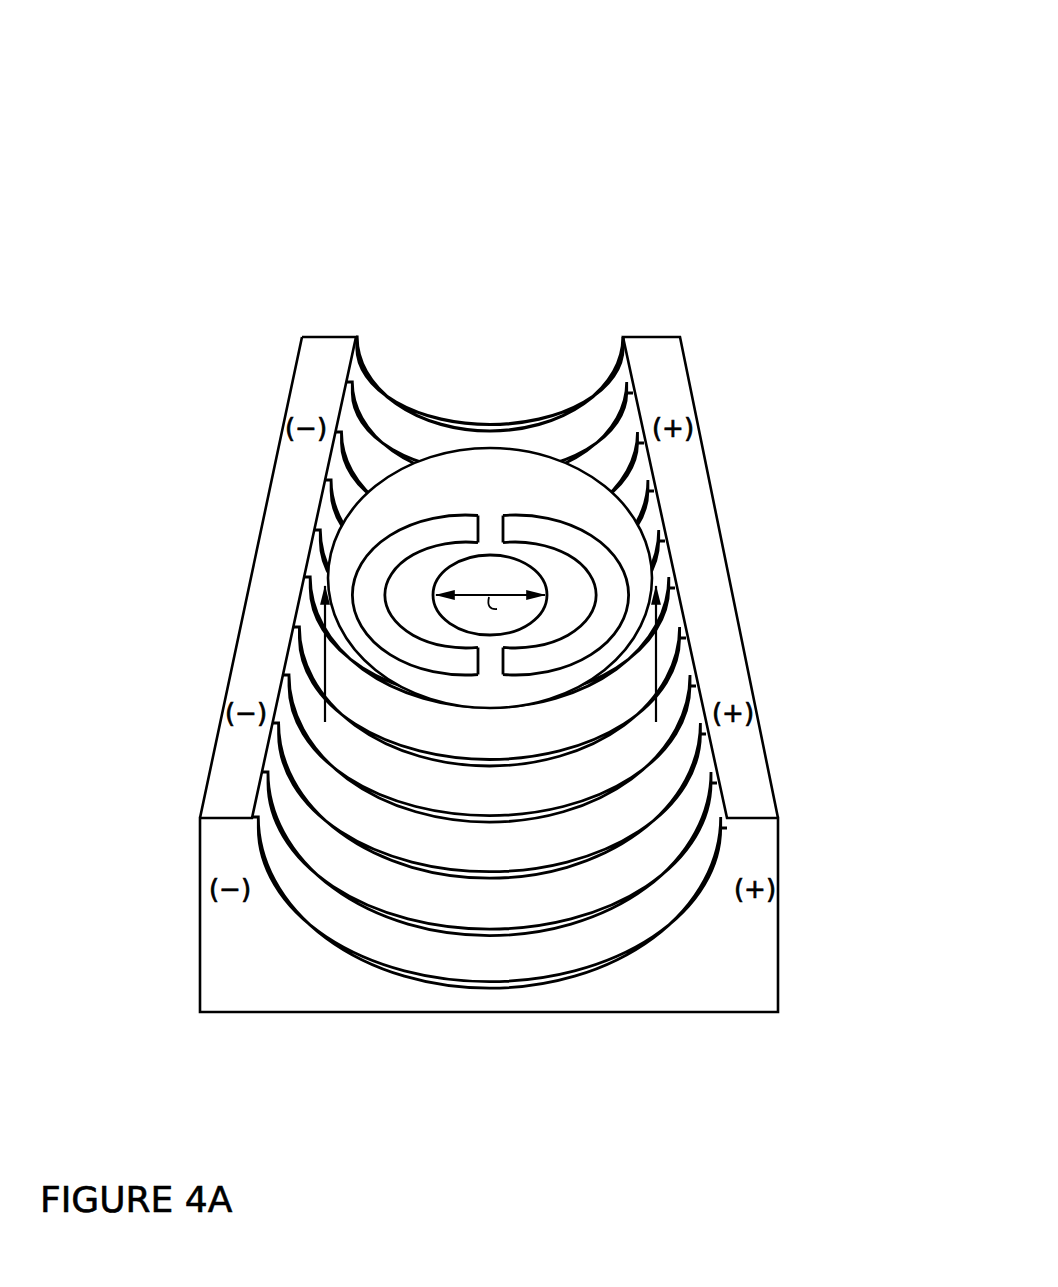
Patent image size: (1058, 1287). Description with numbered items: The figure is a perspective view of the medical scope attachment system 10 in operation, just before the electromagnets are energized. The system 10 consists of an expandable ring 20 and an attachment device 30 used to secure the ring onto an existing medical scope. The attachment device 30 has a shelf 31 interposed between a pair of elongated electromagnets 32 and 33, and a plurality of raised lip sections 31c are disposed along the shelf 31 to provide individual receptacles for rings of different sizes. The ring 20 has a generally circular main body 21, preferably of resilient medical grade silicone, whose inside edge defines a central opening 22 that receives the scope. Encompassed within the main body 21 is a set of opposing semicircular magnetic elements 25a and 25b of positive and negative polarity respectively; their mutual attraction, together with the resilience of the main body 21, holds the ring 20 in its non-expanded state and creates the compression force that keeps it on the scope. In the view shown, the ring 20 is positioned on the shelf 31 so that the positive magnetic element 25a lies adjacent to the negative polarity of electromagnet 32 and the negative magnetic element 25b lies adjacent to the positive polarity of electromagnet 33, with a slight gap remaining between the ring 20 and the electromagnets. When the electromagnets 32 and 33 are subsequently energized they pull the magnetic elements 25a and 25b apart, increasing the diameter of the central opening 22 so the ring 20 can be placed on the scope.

The medical scope attachment system 10 is at (186, 170).
The expandable ring 20 is at (489, 593).
The main body 21 is at (478, 470).
The central opening 22 is at (490, 595).
The magnetic element 25a is at (382, 565).
The magnetic element 25b is at (602, 562).
The attachment device 30 is at (697, 391).
The shelf 31 is at (479, 964).
The raised lip sections 31c is at (712, 729).
The electromagnet 32 is at (296, 657).
The electromagnet 33 is at (684, 657).